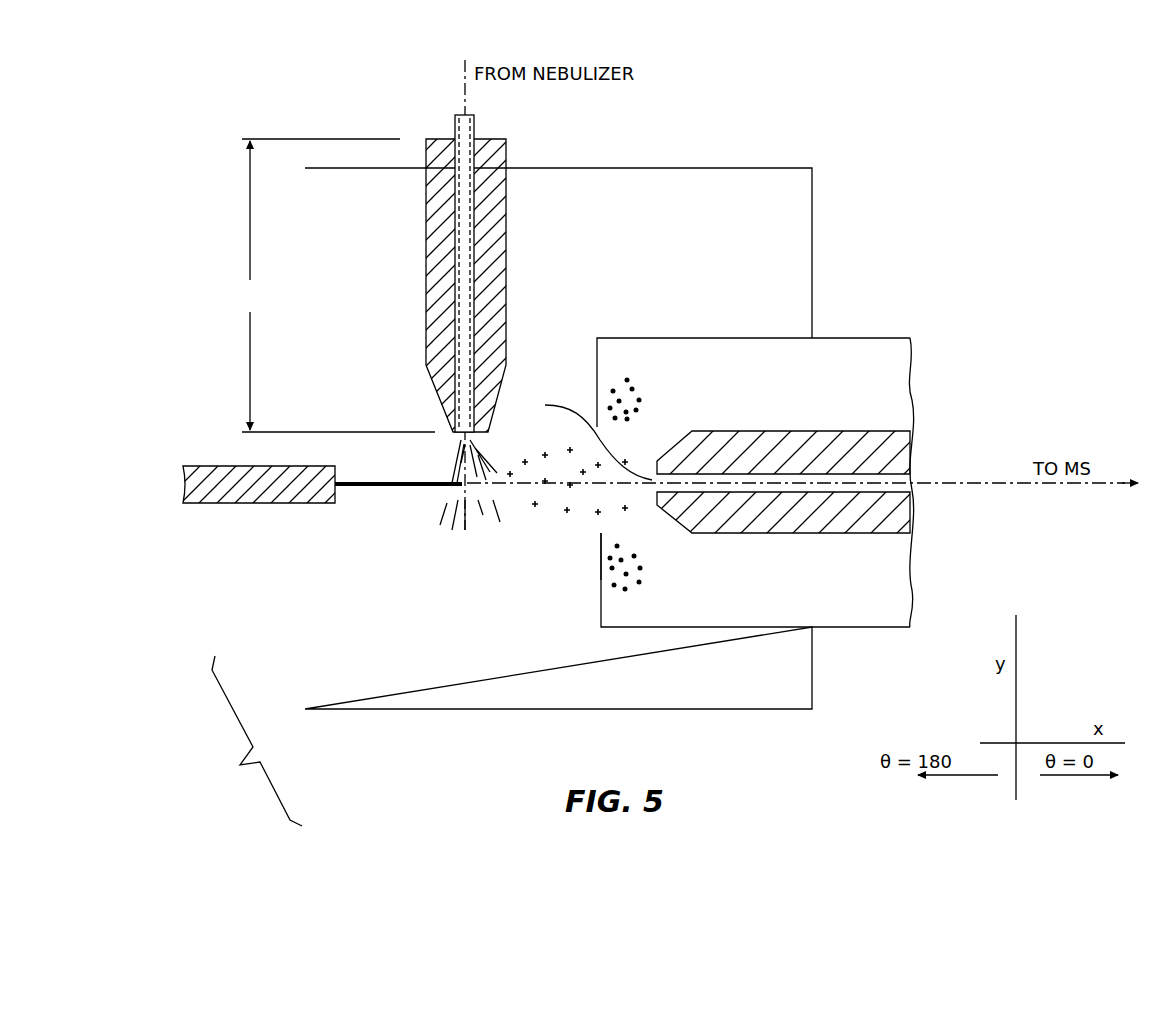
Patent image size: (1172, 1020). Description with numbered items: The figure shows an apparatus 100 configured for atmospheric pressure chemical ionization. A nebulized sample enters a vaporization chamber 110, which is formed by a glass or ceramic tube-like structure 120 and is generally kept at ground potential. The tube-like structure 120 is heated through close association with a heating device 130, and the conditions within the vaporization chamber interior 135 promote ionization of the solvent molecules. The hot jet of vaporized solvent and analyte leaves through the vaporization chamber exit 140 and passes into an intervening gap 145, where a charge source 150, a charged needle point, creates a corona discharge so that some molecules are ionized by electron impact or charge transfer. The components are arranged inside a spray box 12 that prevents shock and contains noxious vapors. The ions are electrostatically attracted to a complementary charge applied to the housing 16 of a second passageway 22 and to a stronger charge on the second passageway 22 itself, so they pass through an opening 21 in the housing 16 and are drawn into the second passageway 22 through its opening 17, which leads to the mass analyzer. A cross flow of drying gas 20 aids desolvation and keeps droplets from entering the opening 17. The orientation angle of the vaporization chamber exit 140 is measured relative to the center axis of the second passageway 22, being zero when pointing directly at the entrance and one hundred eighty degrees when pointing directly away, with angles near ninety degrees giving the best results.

The spray box 12 is at (313, 706).
The housing 16 is at (600, 338).
The opening 17 is at (585, 438).
The drying gas 20 is at (665, 397).
The opening in the housing 21 is at (597, 530).
The second passageway 22 is at (880, 470).
The apparatus 100 is at (222, 806).
The vaporization chamber 110 is at (335, 285).
The tube-like structure 120 is at (478, 128).
The heating device 130 is at (440, 275).
The vaporization chamber interior 135 is at (466, 386).
The vaporization chamber exit 140 is at (455, 460).
The gap 145 is at (505, 548).
The charge source 150 is at (372, 503).